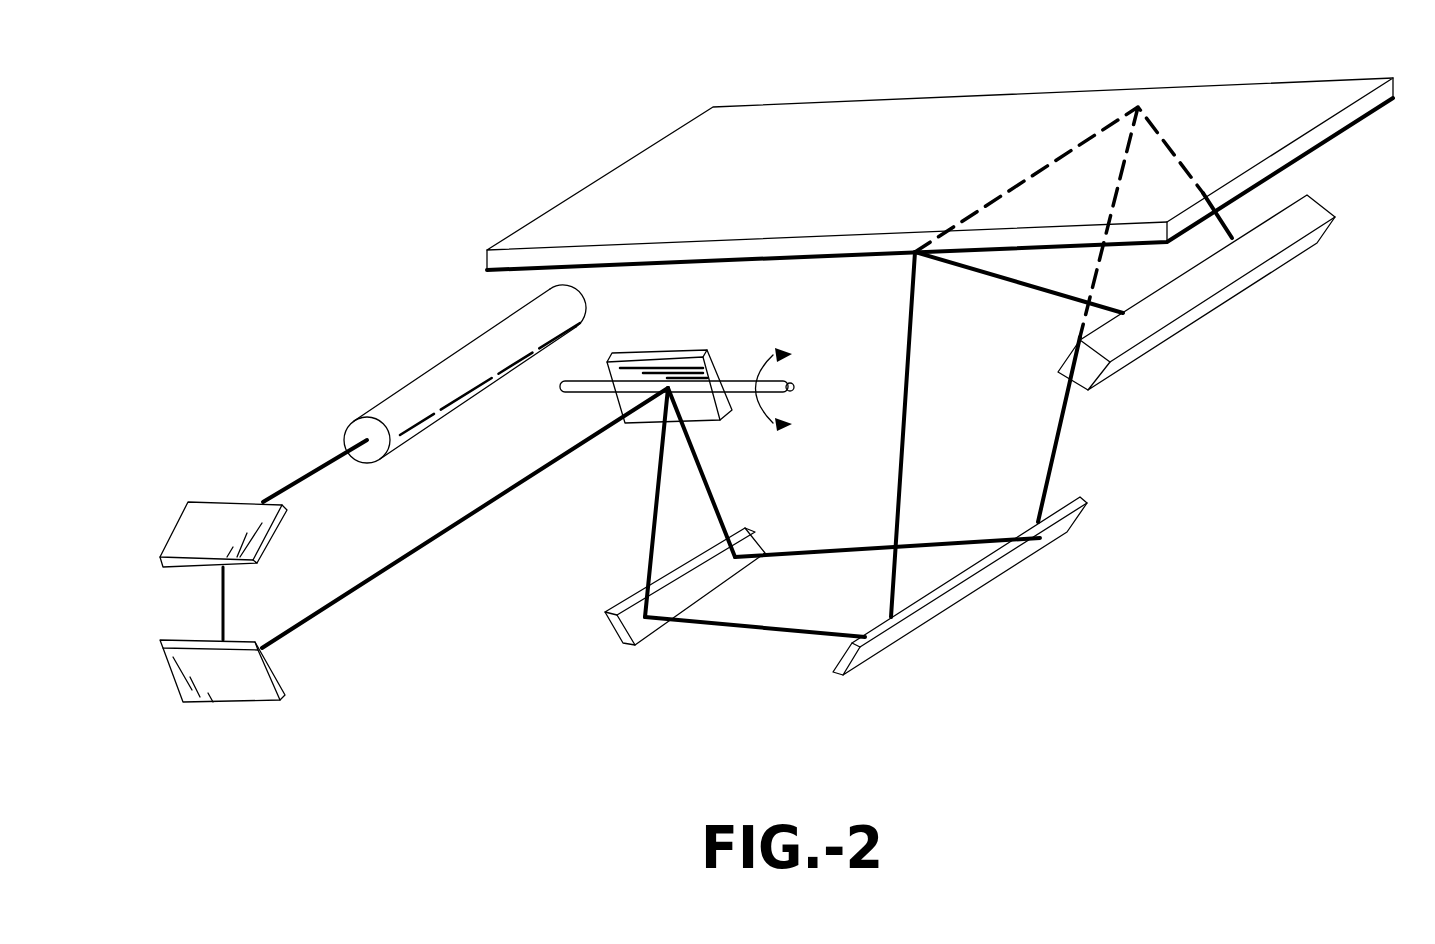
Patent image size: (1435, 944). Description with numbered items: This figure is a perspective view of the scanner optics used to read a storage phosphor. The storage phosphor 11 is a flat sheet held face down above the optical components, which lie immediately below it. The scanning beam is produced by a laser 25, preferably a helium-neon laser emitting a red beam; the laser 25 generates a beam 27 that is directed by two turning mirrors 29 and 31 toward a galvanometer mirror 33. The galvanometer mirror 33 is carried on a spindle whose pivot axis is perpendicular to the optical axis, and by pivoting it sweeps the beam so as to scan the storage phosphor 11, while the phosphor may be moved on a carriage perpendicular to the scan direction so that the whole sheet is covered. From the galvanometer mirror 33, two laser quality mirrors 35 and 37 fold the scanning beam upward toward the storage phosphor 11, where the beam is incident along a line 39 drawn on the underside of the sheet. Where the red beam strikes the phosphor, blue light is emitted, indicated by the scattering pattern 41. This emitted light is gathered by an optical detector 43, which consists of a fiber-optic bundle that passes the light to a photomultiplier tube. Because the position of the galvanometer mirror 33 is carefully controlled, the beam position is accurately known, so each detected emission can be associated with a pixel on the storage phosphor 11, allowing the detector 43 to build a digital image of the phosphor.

The storage phosphor 11 is at (923, 98).
The laser 25 is at (403, 387).
The beam 27 is at (310, 475).
The turning mirror 29 is at (173, 527).
The turning mirror 31 is at (170, 668).
The galvanometer mirror 33 is at (660, 353).
The laser quality mirror 35 is at (612, 617).
The laser quality mirror 37 is at (887, 650).
The line 39 is at (1010, 188).
The scattering pattern 41 is at (1068, 270).
The optical detector 43 is at (1323, 201).